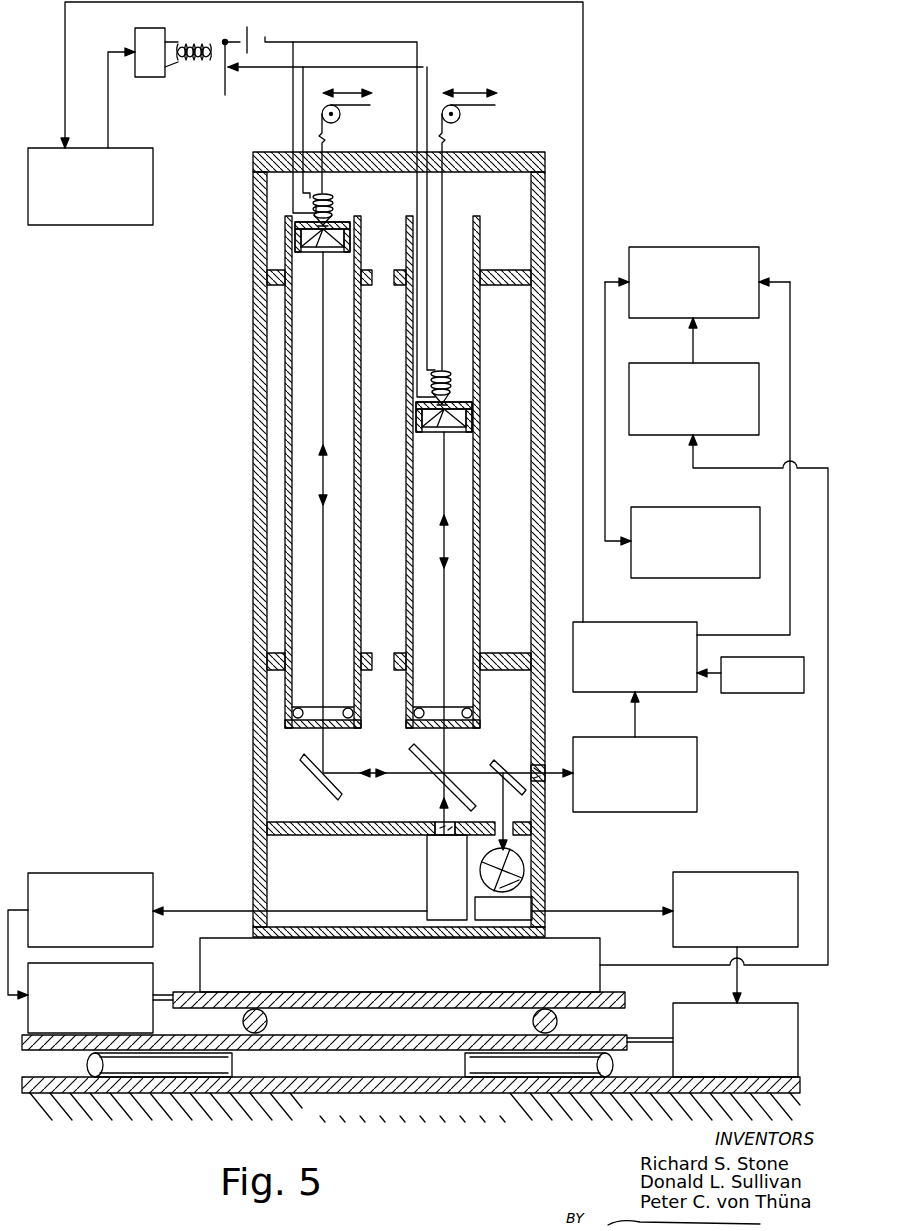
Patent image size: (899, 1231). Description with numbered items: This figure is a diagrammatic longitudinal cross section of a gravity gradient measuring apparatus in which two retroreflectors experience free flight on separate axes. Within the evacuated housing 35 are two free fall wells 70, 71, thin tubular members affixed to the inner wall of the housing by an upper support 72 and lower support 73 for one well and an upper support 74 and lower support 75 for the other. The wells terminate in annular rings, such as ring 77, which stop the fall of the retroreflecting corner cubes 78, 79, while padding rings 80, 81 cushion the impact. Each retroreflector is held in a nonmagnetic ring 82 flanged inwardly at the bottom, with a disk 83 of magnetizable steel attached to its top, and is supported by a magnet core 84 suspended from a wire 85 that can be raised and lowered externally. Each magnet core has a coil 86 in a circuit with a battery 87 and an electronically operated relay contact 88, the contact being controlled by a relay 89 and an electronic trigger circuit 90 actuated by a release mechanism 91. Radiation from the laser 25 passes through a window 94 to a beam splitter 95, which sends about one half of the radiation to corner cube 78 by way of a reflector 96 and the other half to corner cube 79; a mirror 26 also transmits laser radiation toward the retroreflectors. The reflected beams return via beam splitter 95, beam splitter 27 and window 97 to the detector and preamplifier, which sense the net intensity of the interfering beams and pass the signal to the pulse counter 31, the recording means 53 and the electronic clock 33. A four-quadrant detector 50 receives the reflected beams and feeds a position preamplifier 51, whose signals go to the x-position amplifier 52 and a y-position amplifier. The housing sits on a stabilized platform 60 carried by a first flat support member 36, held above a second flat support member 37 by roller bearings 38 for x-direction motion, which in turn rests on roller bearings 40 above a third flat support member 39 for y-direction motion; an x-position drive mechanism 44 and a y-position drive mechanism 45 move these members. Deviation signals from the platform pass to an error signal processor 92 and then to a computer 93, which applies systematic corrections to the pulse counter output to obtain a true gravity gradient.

The laser 25 is at (427, 864).
The mirror 26 is at (340, 728).
The beam splitter 27 is at (504, 774).
The electronic pulse counter 31 is at (670, 640).
The electronic clock 33 is at (740, 698).
The housing 35 is at (545, 210).
The first flat support member 36 is at (605, 1000).
The second flat support member 37 is at (605, 1038).
The roller bearings 38 is at (533, 1021).
The third flat support member 39 is at (790, 1090).
The roller bearings 40 is at (613, 1065).
The x-position drive mechanism 44 is at (135, 975).
The y-position drive mechanism 45 is at (785, 1035).
The four-quadrant detector 50 is at (548, 870).
The position preamplifier 51 is at (513, 905).
The x-position amplifier 52 is at (118, 885).
The recording means 53 is at (712, 885).
The stabilized platform 60 is at (567, 958).
The free fall well 70 is at (362, 531).
The free fall well 71 is at (481, 330).
The upper support 72 is at (366, 272).
The lower support 73 is at (368, 655).
The upper support 74 is at (490, 272).
The lower support 75 is at (488, 656).
The annular ring 77 is at (470, 727).
The retroreflecting corner cube 78 is at (328, 243).
The retroreflecting corner cube 79 is at (447, 423).
The padding ring 80 is at (362, 710).
The padding ring 81 is at (482, 705).
The nonmagnetic ring 82 is at (352, 236).
The disk 83 is at (324, 228).
The magnet core 84 is at (334, 202).
The wire 85 is at (323, 148).
The coil 86 is at (325, 197).
The battery 87 is at (265, 40).
The relay contact 88 is at (225, 88).
The relay 89 is at (190, 47).
The electronic trigger circuit 90 is at (143, 42).
The release mechanism 91 is at (90, 225).
The error signal processor 92 is at (705, 370).
The computer 93 is at (688, 265).
The window 94 is at (436, 818).
The beam splitter 95 is at (438, 783).
The reflector 96 is at (318, 778).
The window 97 is at (551, 766).